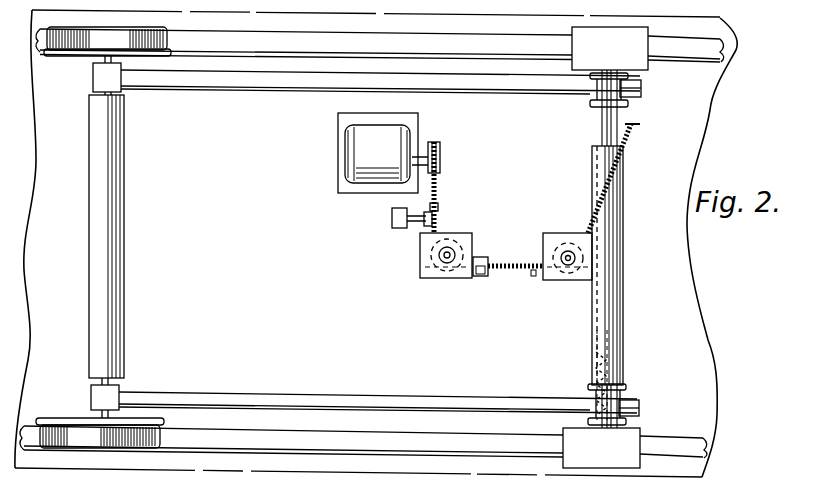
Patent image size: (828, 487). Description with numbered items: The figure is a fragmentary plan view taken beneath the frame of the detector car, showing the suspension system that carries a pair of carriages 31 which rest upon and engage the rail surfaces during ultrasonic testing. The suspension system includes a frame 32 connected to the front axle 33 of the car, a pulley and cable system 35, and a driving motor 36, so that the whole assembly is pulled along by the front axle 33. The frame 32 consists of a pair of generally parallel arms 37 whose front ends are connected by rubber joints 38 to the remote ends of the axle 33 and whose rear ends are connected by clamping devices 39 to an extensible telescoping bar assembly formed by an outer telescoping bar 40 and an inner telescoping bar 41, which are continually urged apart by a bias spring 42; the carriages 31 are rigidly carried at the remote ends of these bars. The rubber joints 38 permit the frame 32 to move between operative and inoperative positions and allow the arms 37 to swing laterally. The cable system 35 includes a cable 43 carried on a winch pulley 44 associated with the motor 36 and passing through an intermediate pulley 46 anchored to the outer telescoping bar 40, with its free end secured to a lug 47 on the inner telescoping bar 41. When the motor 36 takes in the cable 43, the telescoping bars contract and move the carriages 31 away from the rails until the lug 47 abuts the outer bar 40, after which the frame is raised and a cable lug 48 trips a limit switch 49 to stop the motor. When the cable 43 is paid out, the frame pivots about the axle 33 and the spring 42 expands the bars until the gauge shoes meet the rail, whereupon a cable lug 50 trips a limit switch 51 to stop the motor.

The carriage 31 is at (614, 56).
The frame 32 is at (577, 107).
The front axle 33 is at (113, 187).
The pulley and cable system 35 is at (518, 308).
The driving motor 36 is at (385, 164).
The arm 37 is at (252, 83).
The rubber joint 38 is at (123, 78).
The clamping device 39 is at (627, 106).
The outer telescoping bar 40 is at (605, 265).
The inner telescoping bar 41 is at (605, 118).
The bias spring 42 is at (614, 368).
The cable 43 is at (437, 193).
The winch pulley 44 is at (440, 143).
The intermediate pulley 46 is at (573, 275).
The lug 47 is at (631, 125).
The cable lug 48 is at (533, 276).
The limit switch 49 is at (485, 280).
The cable lug 50 is at (433, 208).
The limit switch 51 is at (398, 227).